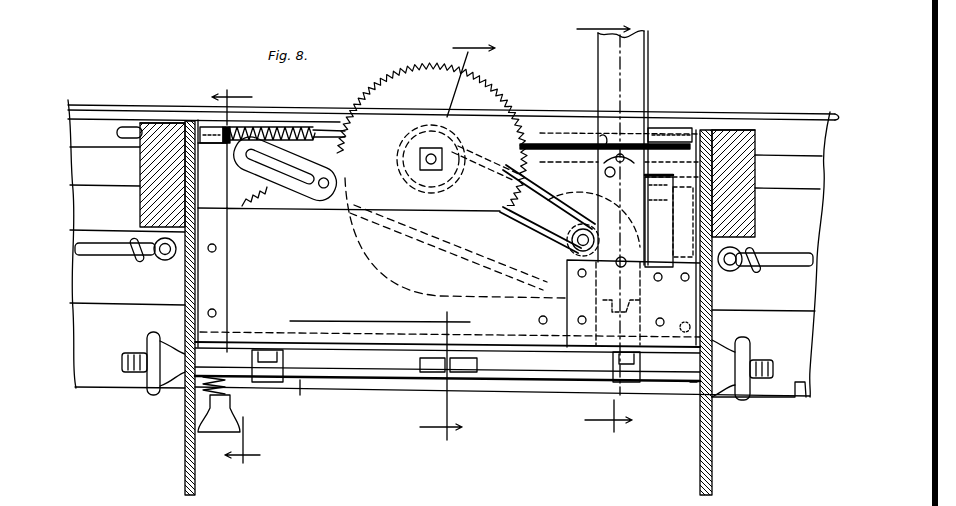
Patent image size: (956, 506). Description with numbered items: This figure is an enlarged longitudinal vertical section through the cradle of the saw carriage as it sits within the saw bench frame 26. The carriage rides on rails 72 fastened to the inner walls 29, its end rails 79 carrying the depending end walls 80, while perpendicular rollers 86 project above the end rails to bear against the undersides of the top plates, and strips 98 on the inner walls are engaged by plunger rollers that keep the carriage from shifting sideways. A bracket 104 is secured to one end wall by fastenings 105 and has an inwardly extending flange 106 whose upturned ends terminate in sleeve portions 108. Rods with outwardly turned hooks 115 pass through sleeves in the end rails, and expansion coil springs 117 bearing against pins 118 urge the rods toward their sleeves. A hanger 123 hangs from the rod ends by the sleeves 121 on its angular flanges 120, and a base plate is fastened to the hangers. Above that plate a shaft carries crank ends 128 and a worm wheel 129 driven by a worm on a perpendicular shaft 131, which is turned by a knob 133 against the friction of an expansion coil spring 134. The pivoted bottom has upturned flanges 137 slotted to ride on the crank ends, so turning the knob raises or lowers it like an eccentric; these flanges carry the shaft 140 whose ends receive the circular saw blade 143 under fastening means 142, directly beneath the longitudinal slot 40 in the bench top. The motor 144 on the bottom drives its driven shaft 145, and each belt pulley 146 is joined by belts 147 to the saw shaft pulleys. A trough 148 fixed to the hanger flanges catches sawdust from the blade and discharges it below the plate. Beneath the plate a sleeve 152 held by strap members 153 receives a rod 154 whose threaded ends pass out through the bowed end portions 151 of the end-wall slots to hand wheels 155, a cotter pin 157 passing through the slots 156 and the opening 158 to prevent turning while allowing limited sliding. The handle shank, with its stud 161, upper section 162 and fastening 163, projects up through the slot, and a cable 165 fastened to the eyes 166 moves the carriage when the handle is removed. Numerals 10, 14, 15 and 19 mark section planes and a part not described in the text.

The section line 10- 10 is at (445, 240).
The section line 14- 14 is at (592, 227).
The section line 15- 15 is at (250, 274).
The side wall 19 is at (712, 281).
The frame 26 is at (830, 165).
The inner walls 29 is at (816, 407).
The longitudinal slot 40 is at (682, 116).
The rails 72 is at (130, 332).
The end rails 79 is at (758, 181).
The end walls 80 is at (185, 476).
The rollers 86 is at (172, 122).
The strips 98 is at (127, 214).
The bracket 104 is at (690, 210).
The fastenings 105 is at (689, 188).
The flange 106 is at (623, 148).
The sleeve portions 108 is at (650, 131).
The hooks 115 is at (128, 126).
The expansion coil springs 117 is at (292, 127).
The pins 118 is at (323, 131).
The angular flanges 120 is at (212, 205).
The sleeves 121 is at (208, 127).
The hanger 123 is at (192, 275).
The crank ends 128 is at (313, 208).
The worm wheel 129 is at (263, 206).
The shaft 131 is at (259, 385).
The knob 133 is at (215, 409).
The expansion coil spring 134 is at (192, 393).
The upturned flanges 137 is at (287, 210).
The shaft 140 is at (443, 161).
The fastening means 142 is at (430, 147).
The circular saw blade 143 is at (473, 101).
The motor 144 is at (594, 219).
The driven shaft 145 is at (571, 236).
The belt pulley 146 is at (572, 251).
The belts 147 is at (549, 190).
The trough 148 is at (427, 250).
The bowed end portions 151 is at (697, 385).
The sleeve 152 is at (362, 380).
The strap members 153 is at (645, 386).
The rod 154 is at (772, 366).
The hand wheels 155 is at (147, 343).
The slots 156 is at (478, 380).
The cotter pin 157 is at (461, 376).
The opening 158 is at (294, 392).
The stud 161 is at (622, 267).
The upper section 162 is at (648, 84).
The fastening 163 is at (604, 174).
The cable 165 is at (99, 249).
The eyes 166 is at (147, 235).